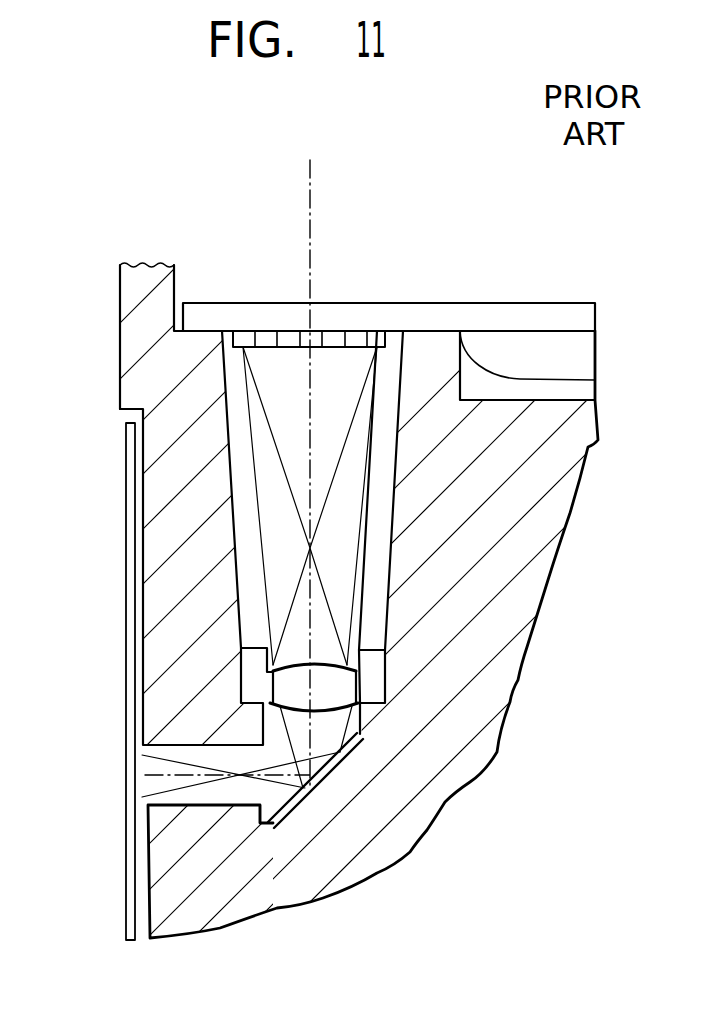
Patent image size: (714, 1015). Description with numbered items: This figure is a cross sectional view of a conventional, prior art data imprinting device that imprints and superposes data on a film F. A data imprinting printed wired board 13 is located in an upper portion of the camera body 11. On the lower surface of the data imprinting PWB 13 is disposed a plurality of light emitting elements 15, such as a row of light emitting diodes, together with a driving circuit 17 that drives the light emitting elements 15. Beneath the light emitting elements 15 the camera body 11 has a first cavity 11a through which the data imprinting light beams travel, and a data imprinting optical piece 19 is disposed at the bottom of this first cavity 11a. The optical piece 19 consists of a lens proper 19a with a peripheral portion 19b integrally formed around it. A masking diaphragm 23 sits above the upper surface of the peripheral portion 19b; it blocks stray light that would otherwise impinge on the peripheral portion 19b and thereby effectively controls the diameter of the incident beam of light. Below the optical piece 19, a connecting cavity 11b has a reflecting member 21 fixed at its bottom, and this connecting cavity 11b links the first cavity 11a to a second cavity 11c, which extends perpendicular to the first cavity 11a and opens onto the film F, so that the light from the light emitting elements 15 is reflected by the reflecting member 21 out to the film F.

The camera body 11 is at (513, 656).
The first cavity 11a is at (388, 455).
The connecting cavity 11b is at (354, 707).
The second cavity 11c is at (220, 805).
The data imprinting printed wired board 13 is at (432, 315).
The light emitting elements 15 is at (266, 345).
The driving circuit 17 is at (538, 347).
The data imprinting optical piece 19 is at (386, 703).
The lens proper 19a is at (325, 665).
The peripheral portion 19b is at (382, 673).
The reflecting member 21 is at (340, 752).
The masking diaphragm 23 is at (373, 645).
The film F is at (126, 651).